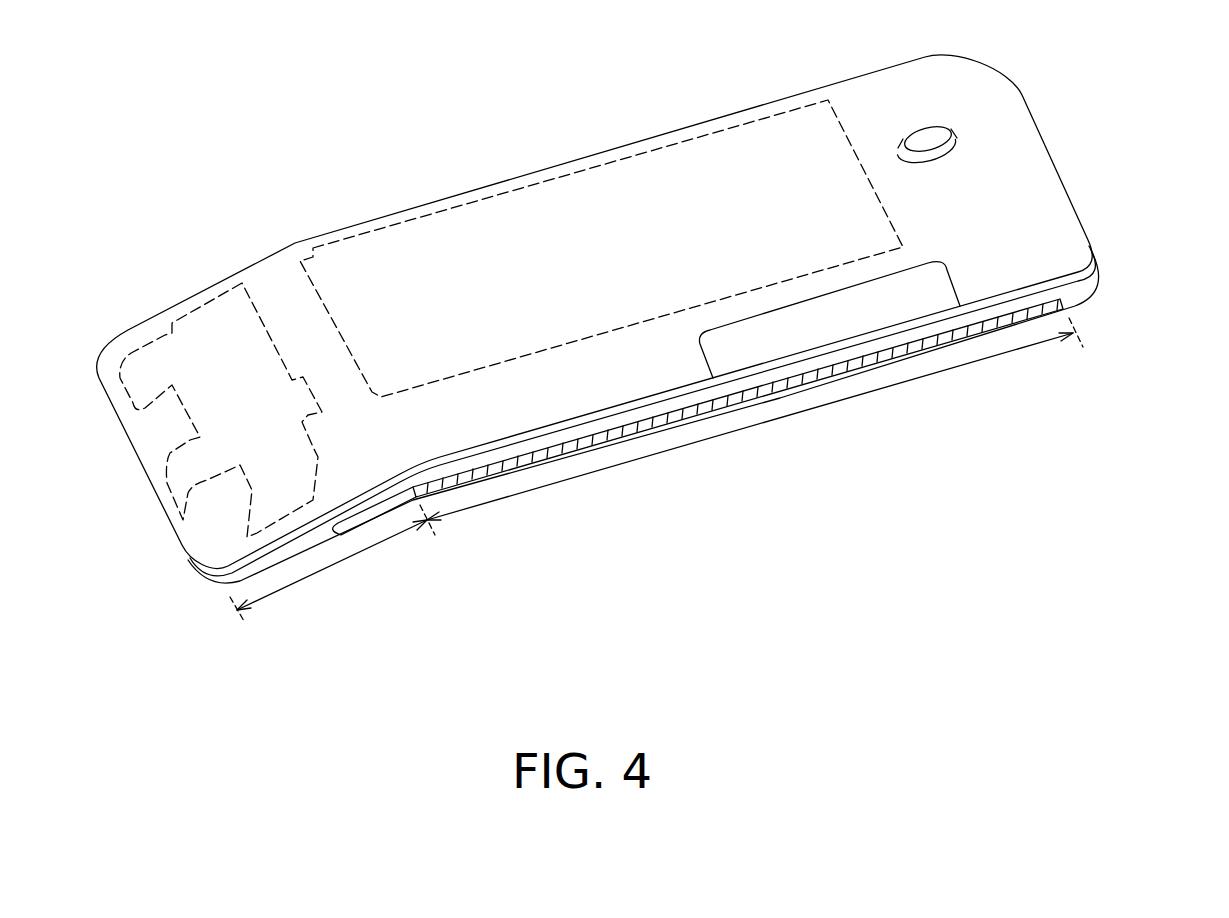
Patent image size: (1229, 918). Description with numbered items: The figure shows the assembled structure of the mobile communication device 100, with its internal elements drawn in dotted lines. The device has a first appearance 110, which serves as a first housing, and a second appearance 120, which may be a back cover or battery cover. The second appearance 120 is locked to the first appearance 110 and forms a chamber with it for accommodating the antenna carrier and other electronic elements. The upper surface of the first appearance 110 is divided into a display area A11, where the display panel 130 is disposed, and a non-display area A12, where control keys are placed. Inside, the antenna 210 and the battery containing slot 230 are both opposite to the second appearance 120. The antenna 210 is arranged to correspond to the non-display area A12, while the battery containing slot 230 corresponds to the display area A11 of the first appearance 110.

The mobile communication device 100 is at (1108, 531).
The first appearance 110 is at (1087, 280).
The second appearance 120 is at (1063, 222).
The display panel 130 is at (937, 340).
The antenna 210 is at (203, 323).
The battery containing slot 230 is at (650, 173).
The display area A11 is at (751, 426).
The non-display area A12 is at (328, 570).